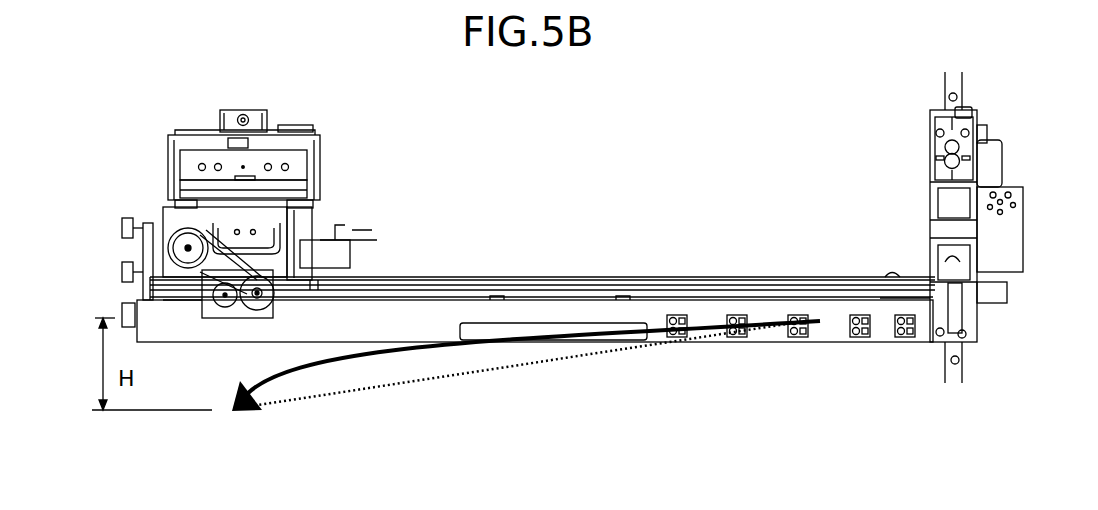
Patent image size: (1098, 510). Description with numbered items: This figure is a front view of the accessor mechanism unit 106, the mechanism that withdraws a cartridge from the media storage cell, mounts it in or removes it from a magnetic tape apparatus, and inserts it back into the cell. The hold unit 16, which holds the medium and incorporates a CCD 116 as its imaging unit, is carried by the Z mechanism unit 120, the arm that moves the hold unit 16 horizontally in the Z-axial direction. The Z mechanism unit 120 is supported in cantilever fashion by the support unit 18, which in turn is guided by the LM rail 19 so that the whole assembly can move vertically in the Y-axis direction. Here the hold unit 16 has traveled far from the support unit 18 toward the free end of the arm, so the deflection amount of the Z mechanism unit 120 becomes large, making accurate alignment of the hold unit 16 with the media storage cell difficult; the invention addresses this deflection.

The hold unit 16 is at (293, 167).
The CCD 116 is at (253, 121).
The Z mechanism unit 120 is at (508, 278).
The accessor mechanism unit 106 is at (750, 264).
The LM rail 19 is at (963, 92).
The support unit 18 is at (994, 177).